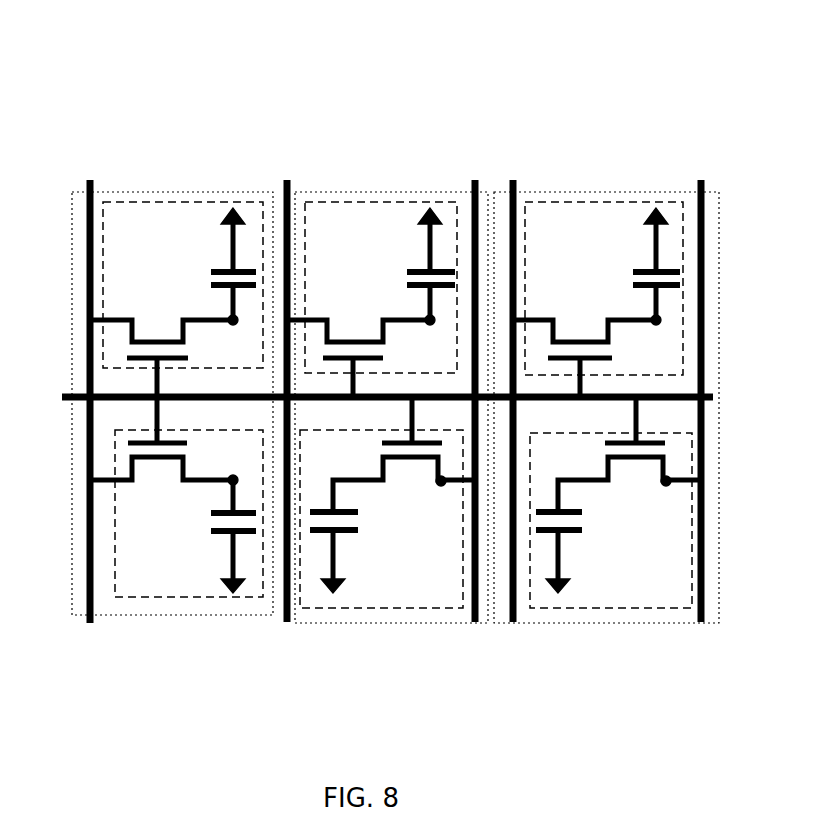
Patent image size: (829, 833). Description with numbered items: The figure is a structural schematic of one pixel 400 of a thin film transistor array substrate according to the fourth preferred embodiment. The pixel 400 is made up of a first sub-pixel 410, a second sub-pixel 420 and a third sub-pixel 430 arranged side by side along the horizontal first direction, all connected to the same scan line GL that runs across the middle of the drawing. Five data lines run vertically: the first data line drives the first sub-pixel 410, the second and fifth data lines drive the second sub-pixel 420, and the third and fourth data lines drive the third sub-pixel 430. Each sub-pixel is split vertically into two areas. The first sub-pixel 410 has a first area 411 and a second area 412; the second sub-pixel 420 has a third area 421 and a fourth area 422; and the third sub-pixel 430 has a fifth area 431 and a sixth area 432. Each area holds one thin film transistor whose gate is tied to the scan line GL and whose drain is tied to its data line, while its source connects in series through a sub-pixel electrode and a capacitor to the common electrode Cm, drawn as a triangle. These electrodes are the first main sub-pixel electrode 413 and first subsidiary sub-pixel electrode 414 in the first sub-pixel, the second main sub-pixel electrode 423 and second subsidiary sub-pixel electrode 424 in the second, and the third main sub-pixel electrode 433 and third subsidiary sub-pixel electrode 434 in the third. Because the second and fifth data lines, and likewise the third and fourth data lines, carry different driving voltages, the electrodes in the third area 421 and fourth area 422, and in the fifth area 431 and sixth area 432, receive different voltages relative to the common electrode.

The pixel 400 is at (395, 42).
The first sub-pixel 410 is at (196, 192).
The first area 411 is at (157, 195).
The second area 412 is at (193, 600).
The first main sub-pixel electrode 413 is at (233, 325).
The first subsidiary sub-pixel electrode 414 is at (233, 475).
The second sub-pixel 420 is at (388, 192).
The third area 421 is at (372, 195).
The fourth area 422 is at (383, 610).
The second main sub-pixel electrode 423 is at (430, 325).
The second subsidiary sub-pixel electrode 424 is at (441, 486).
The third sub-pixel 430 is at (588, 192).
The fifth area 431 is at (558, 195).
The sixth area 432 is at (593, 612).
The third main sub-pixel electrode 433 is at (656, 325).
The third subsidiary sub-pixel electrode 434 is at (666, 486).